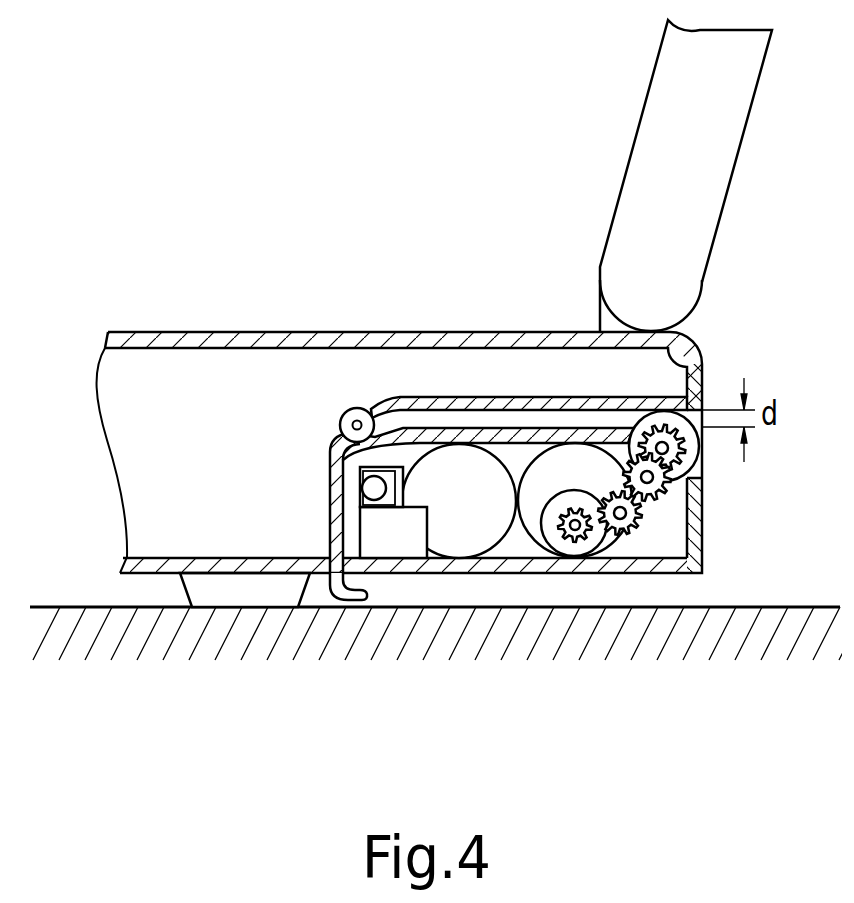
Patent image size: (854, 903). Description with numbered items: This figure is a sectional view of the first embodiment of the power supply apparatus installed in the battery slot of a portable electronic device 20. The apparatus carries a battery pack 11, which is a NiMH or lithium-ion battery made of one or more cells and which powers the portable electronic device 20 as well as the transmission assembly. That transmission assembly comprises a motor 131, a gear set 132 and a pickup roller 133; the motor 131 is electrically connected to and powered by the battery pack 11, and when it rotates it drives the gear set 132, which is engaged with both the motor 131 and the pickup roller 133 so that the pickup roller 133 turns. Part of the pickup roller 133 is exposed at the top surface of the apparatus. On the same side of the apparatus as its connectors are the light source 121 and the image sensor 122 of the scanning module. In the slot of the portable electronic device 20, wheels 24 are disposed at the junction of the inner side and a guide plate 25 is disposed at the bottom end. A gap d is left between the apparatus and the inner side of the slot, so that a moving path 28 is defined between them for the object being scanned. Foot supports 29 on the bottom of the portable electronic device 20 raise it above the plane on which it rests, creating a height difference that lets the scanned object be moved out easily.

The portable electronic device 20 is at (216, 332).
The moving path 28 is at (497, 415).
The motor 131 is at (577, 513).
The wheels 24 is at (346, 412).
The light source 121 is at (374, 488).
The image sensor 122 is at (376, 540).
The pickup roller 133 is at (684, 460).
The gear set 132 is at (658, 496).
The foot supports 29 is at (247, 594).
The guide plate 25 is at (343, 603).
The battery pack 11 is at (530, 513).